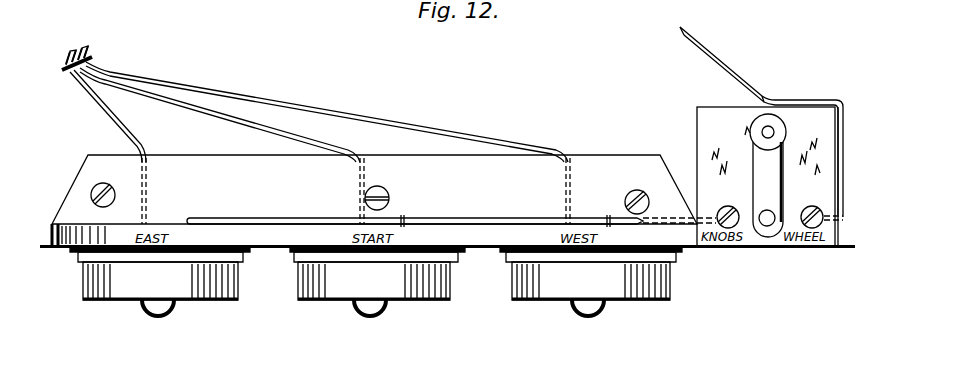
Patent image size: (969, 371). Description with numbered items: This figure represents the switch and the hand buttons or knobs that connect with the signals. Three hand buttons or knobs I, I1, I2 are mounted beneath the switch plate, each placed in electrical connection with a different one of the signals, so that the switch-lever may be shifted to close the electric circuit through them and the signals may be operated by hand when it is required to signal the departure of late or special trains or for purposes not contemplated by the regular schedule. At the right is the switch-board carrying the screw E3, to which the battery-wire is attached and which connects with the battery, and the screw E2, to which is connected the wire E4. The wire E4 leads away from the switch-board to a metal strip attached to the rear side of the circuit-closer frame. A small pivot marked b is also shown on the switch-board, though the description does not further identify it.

The hand button or knob I is at (160, 281).
The hand button or knob I1 is at (377, 281).
The hand button or knob I2 is at (591, 281).
The screw E2 is at (767, 177).
The screw E3 is at (751, 175).
The wire E4 is at (761, 122).
The pivot pin b is at (768, 132).